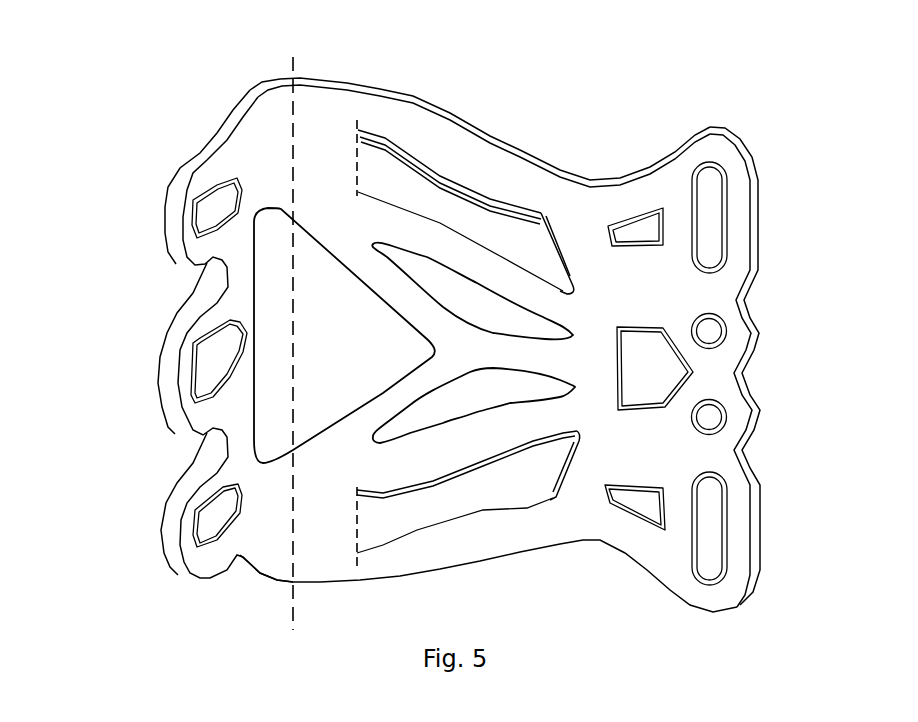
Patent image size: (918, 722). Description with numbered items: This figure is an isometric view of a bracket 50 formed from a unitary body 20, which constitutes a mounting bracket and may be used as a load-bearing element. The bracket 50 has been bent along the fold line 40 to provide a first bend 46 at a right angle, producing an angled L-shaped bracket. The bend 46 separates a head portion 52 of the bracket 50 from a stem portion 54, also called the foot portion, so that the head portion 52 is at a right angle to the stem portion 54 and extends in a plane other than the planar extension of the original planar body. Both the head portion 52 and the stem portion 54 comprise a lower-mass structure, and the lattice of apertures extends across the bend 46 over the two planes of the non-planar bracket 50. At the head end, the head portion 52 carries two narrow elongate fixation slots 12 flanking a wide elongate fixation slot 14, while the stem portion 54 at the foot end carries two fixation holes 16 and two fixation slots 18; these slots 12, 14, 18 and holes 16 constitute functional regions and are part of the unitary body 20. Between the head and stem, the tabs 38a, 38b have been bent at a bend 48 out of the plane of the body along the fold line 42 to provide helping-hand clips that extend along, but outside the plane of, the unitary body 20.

The bracket 50 is at (153, 100).
The first bend 46 is at (293, 147).
The fold line 40 is at (293, 68).
The fold line 42 is at (357, 124).
The bend 48 is at (363, 168).
The tab 38a is at (533, 233).
The tab 38b is at (542, 493).
The stem portion 54 is at (687, 148).
The narrow elongate fixation slot 12 is at (207, 203).
The fixation slot 18 is at (723, 210).
The head portion 52 is at (177, 332).
The fixation hole 16 is at (723, 333).
The wide elongate fixation slot 14 is at (205, 382).
The unitary body 20 is at (320, 530).